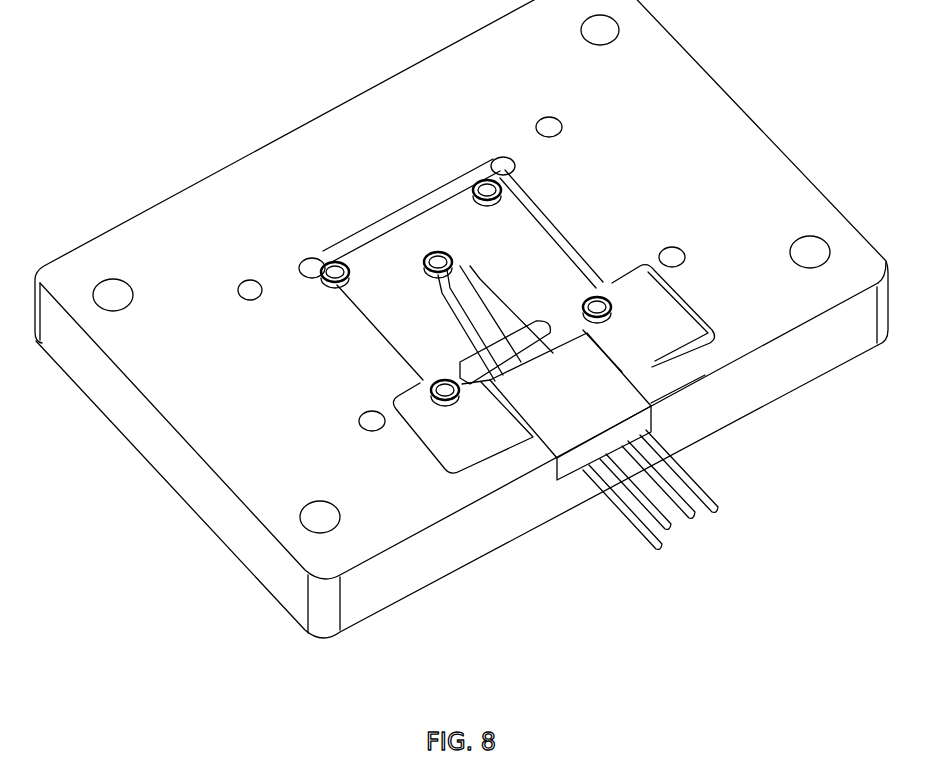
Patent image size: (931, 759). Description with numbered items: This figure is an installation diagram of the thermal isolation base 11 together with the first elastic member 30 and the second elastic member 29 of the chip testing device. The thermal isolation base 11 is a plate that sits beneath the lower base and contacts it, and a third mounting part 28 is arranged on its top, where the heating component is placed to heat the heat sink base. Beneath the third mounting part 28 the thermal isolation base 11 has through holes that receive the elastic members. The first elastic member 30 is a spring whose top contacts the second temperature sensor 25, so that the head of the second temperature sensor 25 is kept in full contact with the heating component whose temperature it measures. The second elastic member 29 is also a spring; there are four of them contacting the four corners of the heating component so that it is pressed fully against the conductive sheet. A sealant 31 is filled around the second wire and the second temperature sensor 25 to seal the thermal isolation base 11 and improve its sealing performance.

The thermal isolation base 11 is at (122, 258).
The second temperature sensor 25 is at (650, 489).
The third mounting part 28 is at (382, 262).
The second elastic member 29 is at (325, 262).
The first elastic member 30 is at (432, 256).
The sealant 31 is at (603, 423).